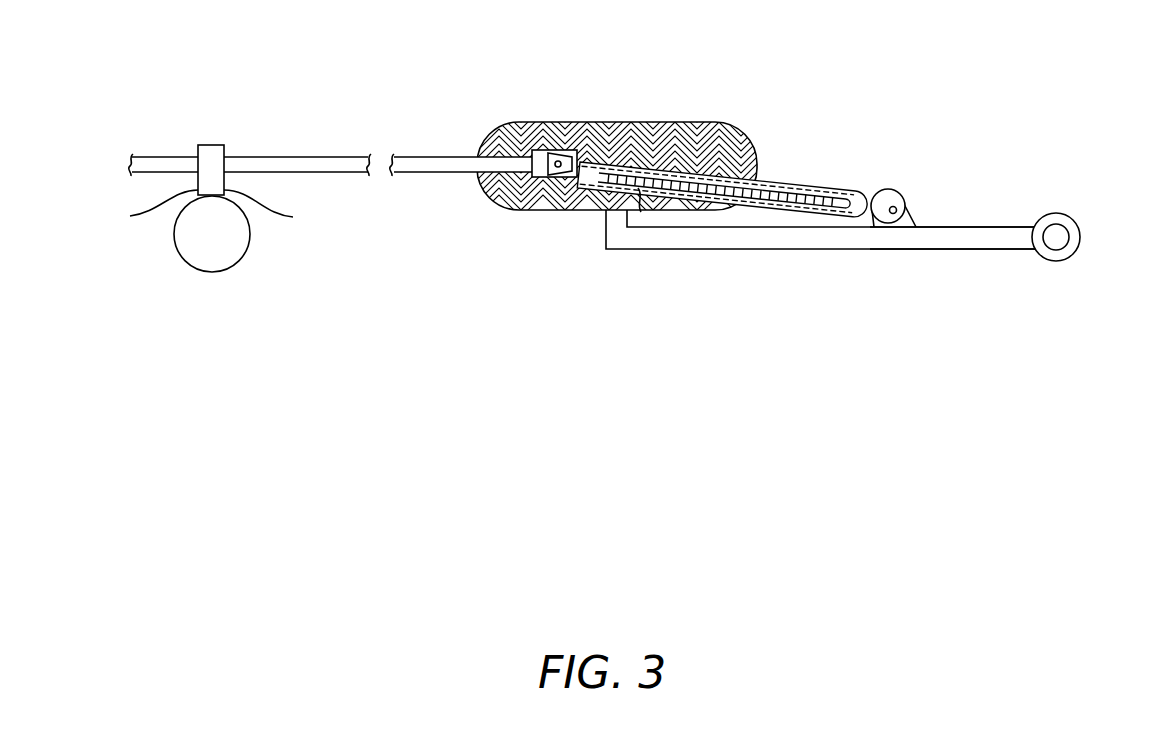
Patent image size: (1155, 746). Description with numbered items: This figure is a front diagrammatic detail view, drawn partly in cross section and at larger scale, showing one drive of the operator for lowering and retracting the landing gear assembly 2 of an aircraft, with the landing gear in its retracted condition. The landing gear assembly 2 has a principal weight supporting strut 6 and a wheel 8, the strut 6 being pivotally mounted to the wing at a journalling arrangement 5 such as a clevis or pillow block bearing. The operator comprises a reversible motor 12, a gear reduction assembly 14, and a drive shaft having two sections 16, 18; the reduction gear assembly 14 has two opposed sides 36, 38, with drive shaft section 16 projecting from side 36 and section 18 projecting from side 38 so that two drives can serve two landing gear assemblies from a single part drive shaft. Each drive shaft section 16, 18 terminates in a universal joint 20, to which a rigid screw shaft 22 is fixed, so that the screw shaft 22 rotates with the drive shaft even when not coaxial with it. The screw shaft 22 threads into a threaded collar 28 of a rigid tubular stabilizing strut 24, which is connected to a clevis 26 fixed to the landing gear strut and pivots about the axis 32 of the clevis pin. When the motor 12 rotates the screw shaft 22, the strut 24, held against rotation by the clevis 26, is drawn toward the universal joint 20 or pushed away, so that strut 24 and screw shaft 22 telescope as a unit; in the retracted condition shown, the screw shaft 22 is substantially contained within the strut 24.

The landing gear assembly 2 is at (896, 403).
The journalling arrangement 5 is at (1058, 197).
The weight supporting strut 6 is at (938, 250).
The wheel 8 is at (518, 210).
The motor 12 is at (198, 250).
The gear reduction assembly 14 is at (208, 151).
The drive shaft section 16 is at (180, 163).
The drive shaft section 18 is at (352, 162).
The universal joint 20 is at (568, 132).
The screw shaft 22 is at (793, 185).
The tubular stabilizing strut 24 is at (782, 212).
The clevis 26 is at (897, 170).
The threaded collar 28 is at (605, 182).
The axis 32 is at (910, 210).
The side 36 is at (144, 211).
The side 38 is at (278, 211).